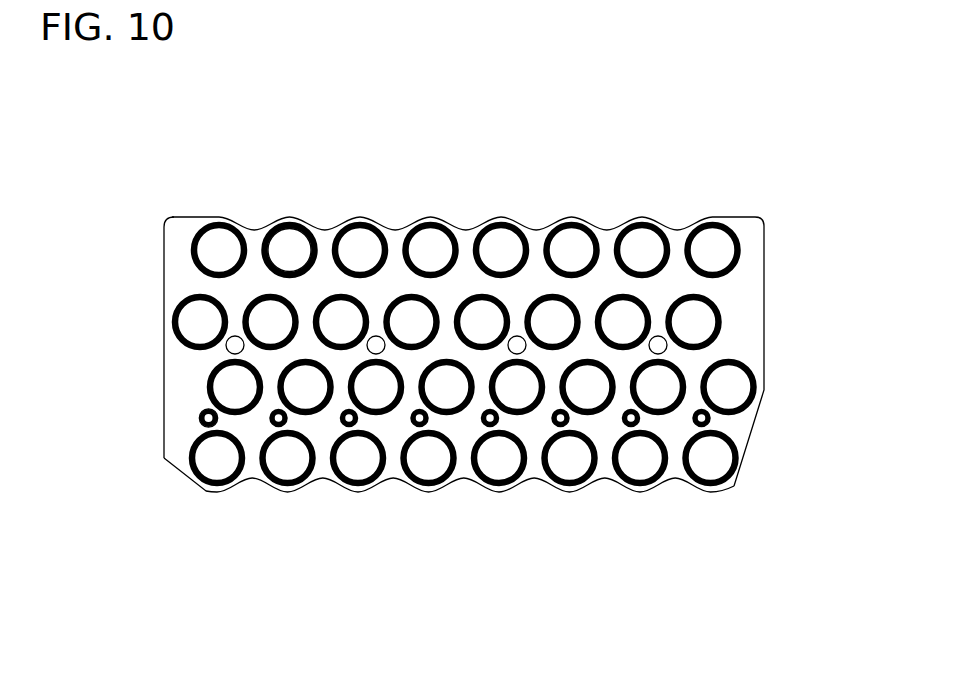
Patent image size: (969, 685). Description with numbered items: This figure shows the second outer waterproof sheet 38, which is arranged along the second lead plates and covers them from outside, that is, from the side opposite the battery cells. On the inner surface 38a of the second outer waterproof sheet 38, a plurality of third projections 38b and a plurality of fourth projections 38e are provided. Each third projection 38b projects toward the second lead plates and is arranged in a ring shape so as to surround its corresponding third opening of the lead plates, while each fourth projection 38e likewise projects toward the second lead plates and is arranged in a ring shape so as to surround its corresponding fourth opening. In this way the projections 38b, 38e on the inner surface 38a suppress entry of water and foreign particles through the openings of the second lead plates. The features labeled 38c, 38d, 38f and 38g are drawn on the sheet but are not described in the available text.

The second outer waterproof sheet 38 is at (765, 157).
The inner surface 38a is at (753, 280).
The third projection 38b is at (287, 227).
The scalloped edge 38c is at (268, 228).
The tube hole 38d is at (312, 246).
The fourth projection 38e is at (200, 427).
The pin 38f is at (200, 411).
The ring joint 38g is at (222, 437).